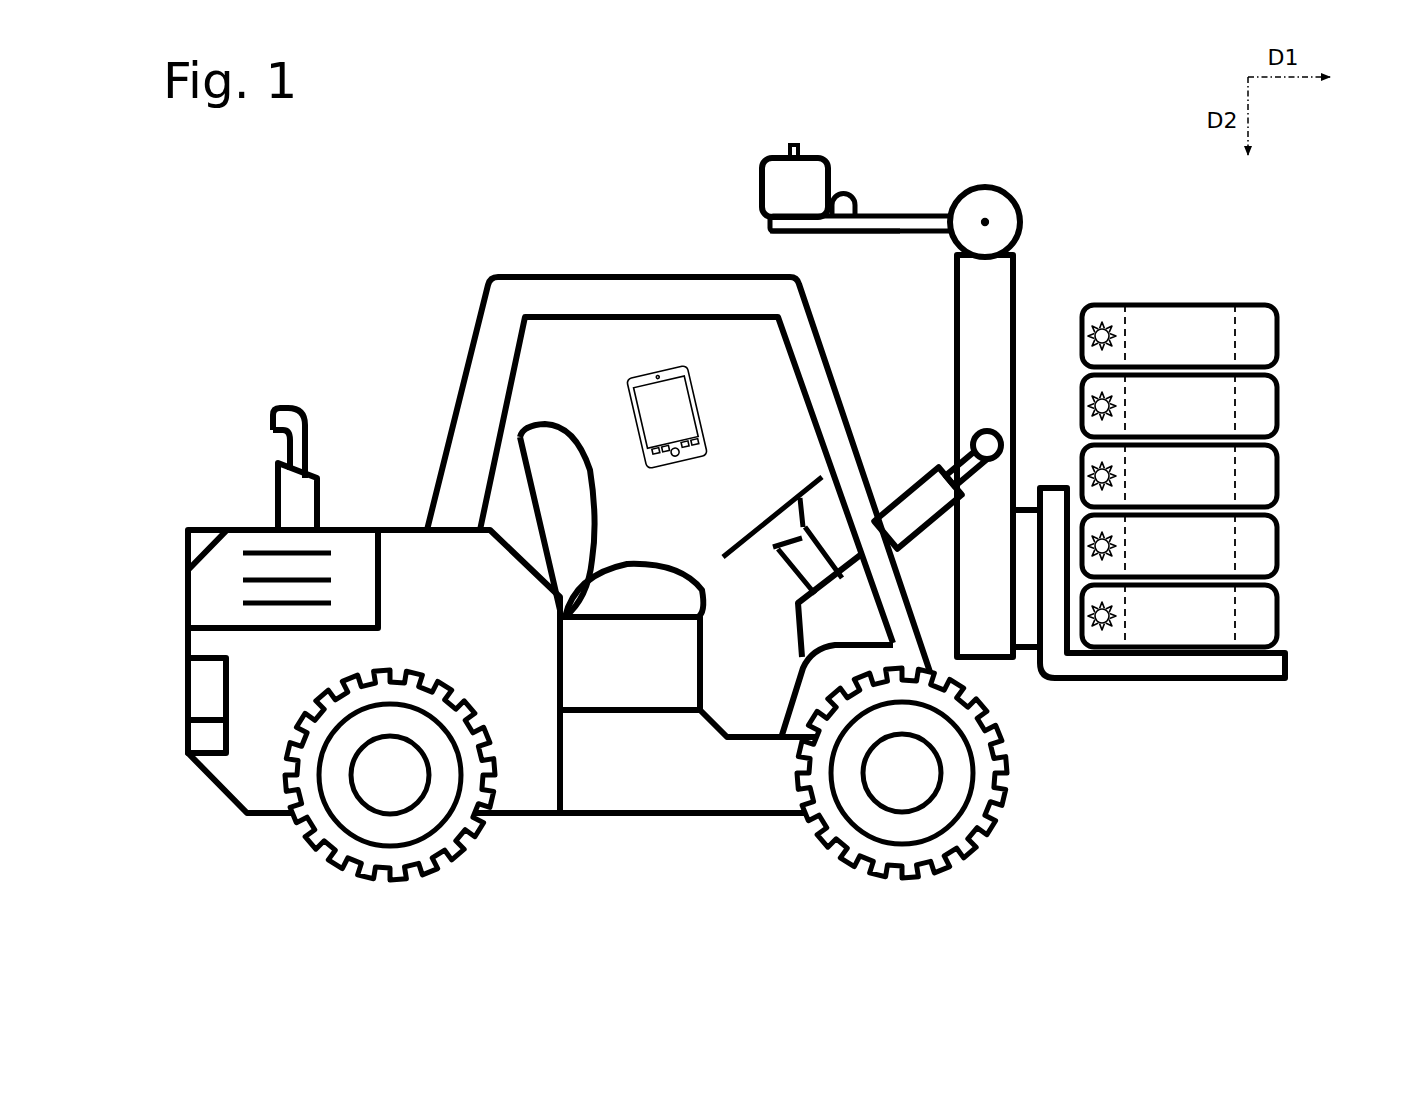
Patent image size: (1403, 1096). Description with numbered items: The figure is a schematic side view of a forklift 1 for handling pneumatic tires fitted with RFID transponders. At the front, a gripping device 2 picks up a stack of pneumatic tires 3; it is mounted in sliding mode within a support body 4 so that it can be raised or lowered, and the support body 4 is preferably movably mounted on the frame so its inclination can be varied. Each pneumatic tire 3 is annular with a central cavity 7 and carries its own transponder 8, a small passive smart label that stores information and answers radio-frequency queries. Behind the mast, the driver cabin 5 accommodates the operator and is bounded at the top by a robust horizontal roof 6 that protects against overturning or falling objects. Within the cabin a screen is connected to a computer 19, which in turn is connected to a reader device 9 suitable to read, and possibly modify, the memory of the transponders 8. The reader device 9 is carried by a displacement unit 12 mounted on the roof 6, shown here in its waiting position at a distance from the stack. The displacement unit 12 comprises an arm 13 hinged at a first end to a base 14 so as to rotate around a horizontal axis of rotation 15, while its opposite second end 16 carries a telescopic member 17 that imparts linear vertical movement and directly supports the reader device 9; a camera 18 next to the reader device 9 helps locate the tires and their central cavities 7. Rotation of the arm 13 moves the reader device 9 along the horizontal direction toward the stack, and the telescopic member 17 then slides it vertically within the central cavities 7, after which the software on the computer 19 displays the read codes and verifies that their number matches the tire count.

The forklift 1 is at (1168, 848).
The gripping device 2 is at (1180, 667).
The pneumatic tire 3 is at (1257, 618).
The support body 4 is at (985, 340).
The driver cabin 5 is at (614, 172).
The horizontal roof 6 is at (565, 295).
The central cavity 7 is at (1136, 540).
The transponder 8 is at (1105, 627).
The reader device 9 is at (788, 152).
The displacement unit 12 is at (918, 115).
The arm 13 is at (893, 222).
The base 14 is at (1003, 223).
The horizontal axis of rotation 15 is at (985, 222).
The second end 16 is at (785, 223).
The telescopic member 17 is at (812, 180).
The camera 18 is at (840, 212).
The computer 19 is at (667, 410).